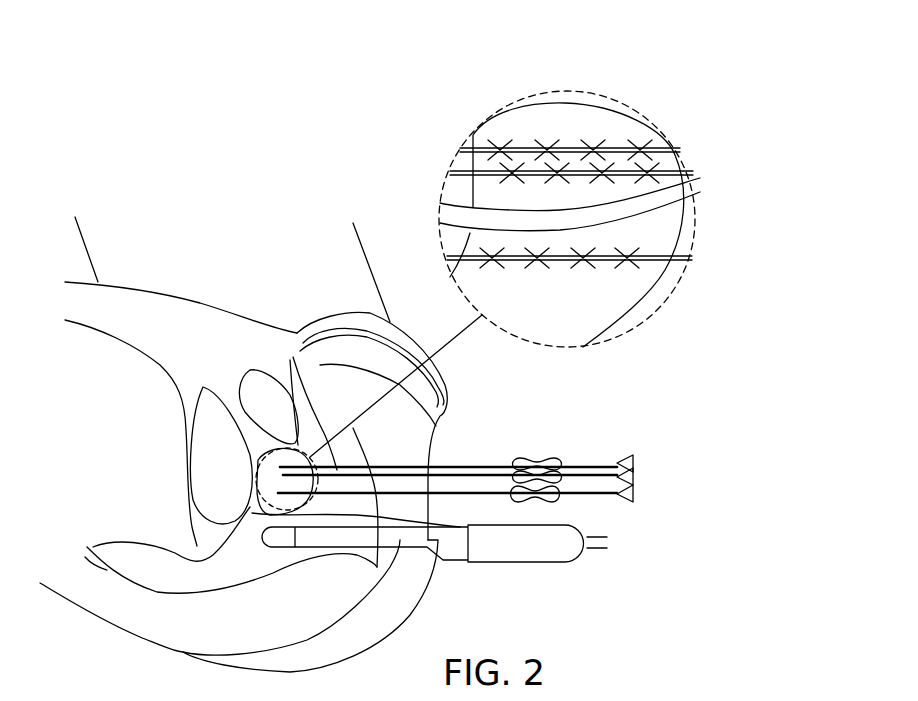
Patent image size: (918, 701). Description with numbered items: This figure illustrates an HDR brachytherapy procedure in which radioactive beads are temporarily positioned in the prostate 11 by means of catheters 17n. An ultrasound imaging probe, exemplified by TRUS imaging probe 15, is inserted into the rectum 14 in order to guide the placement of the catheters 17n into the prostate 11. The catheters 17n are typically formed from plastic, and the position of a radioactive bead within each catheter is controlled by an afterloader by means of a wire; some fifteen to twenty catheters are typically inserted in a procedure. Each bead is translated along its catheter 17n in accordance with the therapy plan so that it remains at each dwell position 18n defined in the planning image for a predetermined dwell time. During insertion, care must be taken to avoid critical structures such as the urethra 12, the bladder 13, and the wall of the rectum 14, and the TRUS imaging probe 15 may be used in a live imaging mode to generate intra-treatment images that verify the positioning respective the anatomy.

The prostate 11 is at (250, 507).
The urethra 12 is at (297, 335).
The bladder 13 is at (212, 442).
The rectum 14 is at (90, 553).
The TRUS imaging probe 15 is at (523, 552).
The catheters 17n is at (633, 478).
The dwell positions 18n is at (580, 140).